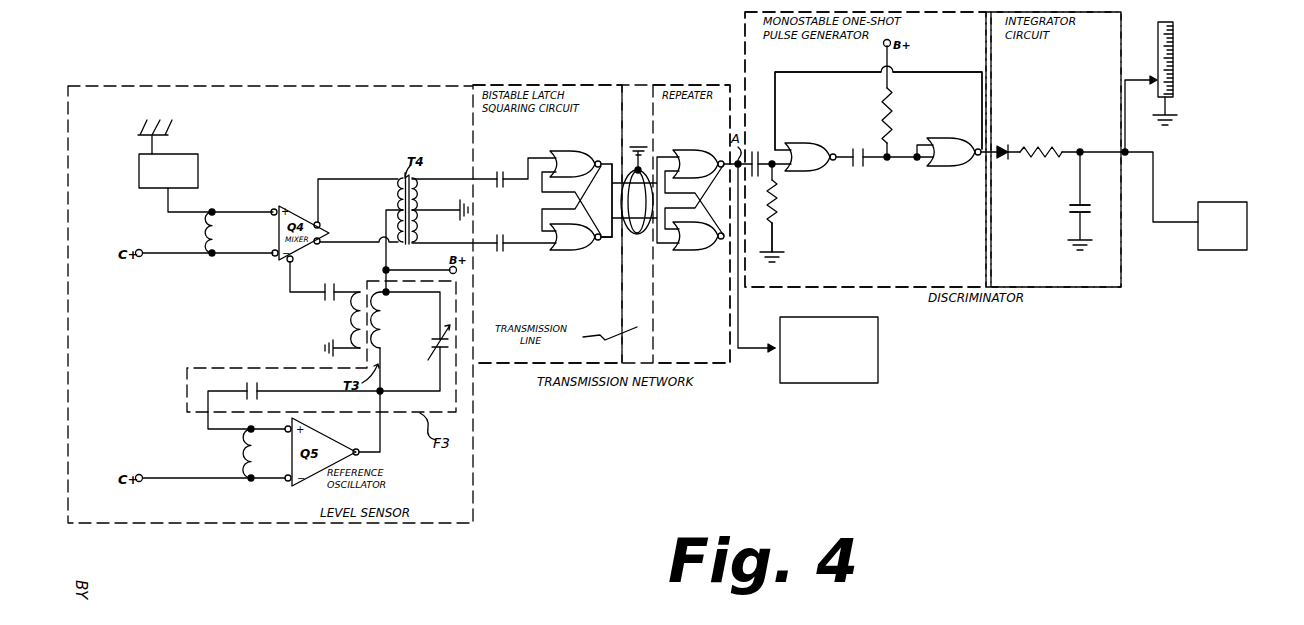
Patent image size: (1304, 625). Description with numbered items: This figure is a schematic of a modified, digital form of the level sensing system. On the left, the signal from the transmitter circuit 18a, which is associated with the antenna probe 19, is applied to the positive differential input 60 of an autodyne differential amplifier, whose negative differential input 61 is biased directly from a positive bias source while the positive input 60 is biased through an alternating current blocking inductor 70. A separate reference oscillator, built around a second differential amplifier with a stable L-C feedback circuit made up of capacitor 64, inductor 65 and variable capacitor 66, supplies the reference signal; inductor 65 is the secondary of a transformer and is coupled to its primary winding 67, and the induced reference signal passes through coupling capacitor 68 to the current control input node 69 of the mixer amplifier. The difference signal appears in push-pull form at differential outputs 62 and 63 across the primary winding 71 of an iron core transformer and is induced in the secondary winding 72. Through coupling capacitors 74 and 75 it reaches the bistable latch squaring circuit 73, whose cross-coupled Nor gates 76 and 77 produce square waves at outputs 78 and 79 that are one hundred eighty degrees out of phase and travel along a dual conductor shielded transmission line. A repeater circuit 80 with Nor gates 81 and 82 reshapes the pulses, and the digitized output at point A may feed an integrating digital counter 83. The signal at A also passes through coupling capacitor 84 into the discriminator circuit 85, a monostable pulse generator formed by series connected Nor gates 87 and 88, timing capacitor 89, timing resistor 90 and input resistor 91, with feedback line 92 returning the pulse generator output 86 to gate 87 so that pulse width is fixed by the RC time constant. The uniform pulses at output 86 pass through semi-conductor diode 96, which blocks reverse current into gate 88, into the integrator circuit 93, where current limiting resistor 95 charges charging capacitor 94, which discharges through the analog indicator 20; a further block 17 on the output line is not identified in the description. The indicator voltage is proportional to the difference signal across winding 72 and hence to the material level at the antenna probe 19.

The output control unit 17 is at (1250, 230).
The transmitter circuit 18a is at (198, 172).
The antenna probe 19 is at (137, 142).
The analog indicator 20 is at (1175, 36).
The positive differential input 60 is at (271, 209).
The negative differential input 61 is at (271, 256).
The differential output 62 is at (320, 225).
The differential output 63 is at (320, 243).
The capacitor 64 is at (261, 386).
The inductor 65 is at (388, 323).
The variable capacitor 66 is at (438, 354).
The primary winding 67 is at (355, 320).
The coupling capacitor 68 is at (322, 292).
The current control input node 69 is at (288, 263).
The alternating current blocking inductor 70 is at (204, 233).
The primary winding 71 is at (397, 177).
The secondary winding 72 is at (425, 178).
The bistable latch squaring circuit 73 is at (480, 85).
The coupling capacitor 74 is at (511, 150).
The coupling capacitor 75 is at (515, 218).
The Nor gate 76 is at (585, 151).
The Nor gate 77 is at (570, 252).
The output line 78 is at (611, 159).
The output line 79 is at (604, 240).
The repeater circuit 80 is at (704, 85).
The Nor gate 81 is at (704, 149).
The Nor gate 82 is at (692, 251).
The integrating digital counter 83 is at (841, 384).
The coupling capacitor 84 is at (768, 170).
The discriminator circuit 85 is at (745, 12).
The pulse generator output 86 is at (980, 156).
The Nor gate 87 is at (818, 126).
The Nor gate 88 is at (945, 166).
The timing capacitor 89 is at (862, 168).
The timing resistor 90 is at (884, 118).
The input resistor 91 is at (778, 213).
The feedback line 92 is at (846, 78).
The integrator circuit 93 is at (1100, 12).
The charging capacitor 94 is at (1072, 212).
The current limiting resistor 95 is at (1057, 147).
The semi-conductor diode 96 is at (1002, 160).